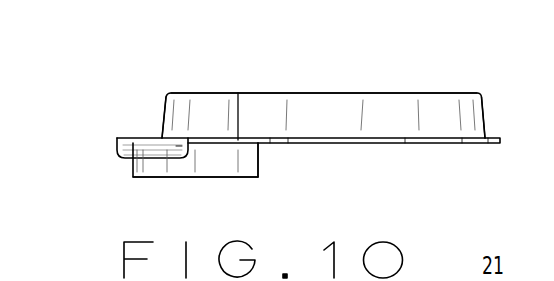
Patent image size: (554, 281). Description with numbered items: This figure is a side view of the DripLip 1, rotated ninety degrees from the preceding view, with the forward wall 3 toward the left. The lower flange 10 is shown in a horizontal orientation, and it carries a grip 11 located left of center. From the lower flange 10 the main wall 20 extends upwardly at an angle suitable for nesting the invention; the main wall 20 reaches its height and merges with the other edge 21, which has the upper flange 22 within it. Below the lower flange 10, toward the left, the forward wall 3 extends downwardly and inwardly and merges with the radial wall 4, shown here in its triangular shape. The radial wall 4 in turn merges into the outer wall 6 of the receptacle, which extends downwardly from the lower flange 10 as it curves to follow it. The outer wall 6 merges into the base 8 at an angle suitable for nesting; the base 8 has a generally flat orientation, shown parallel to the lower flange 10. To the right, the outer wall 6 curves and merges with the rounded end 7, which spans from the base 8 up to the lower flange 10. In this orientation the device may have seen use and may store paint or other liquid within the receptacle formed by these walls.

The DripLip 1 is at (111, 79).
The forward wall 3 is at (117, 148).
The radial wall 4 is at (178, 147).
The outer wall 6 is at (222, 162).
The rounded end 7 is at (258, 160).
The base 8 is at (142, 177).
The lower flange 10 is at (488, 144).
The grip 11 is at (238, 93).
The main wall 20 is at (322, 113).
The other edge 21 is at (165, 95).
The upper flange 22 is at (395, 93).